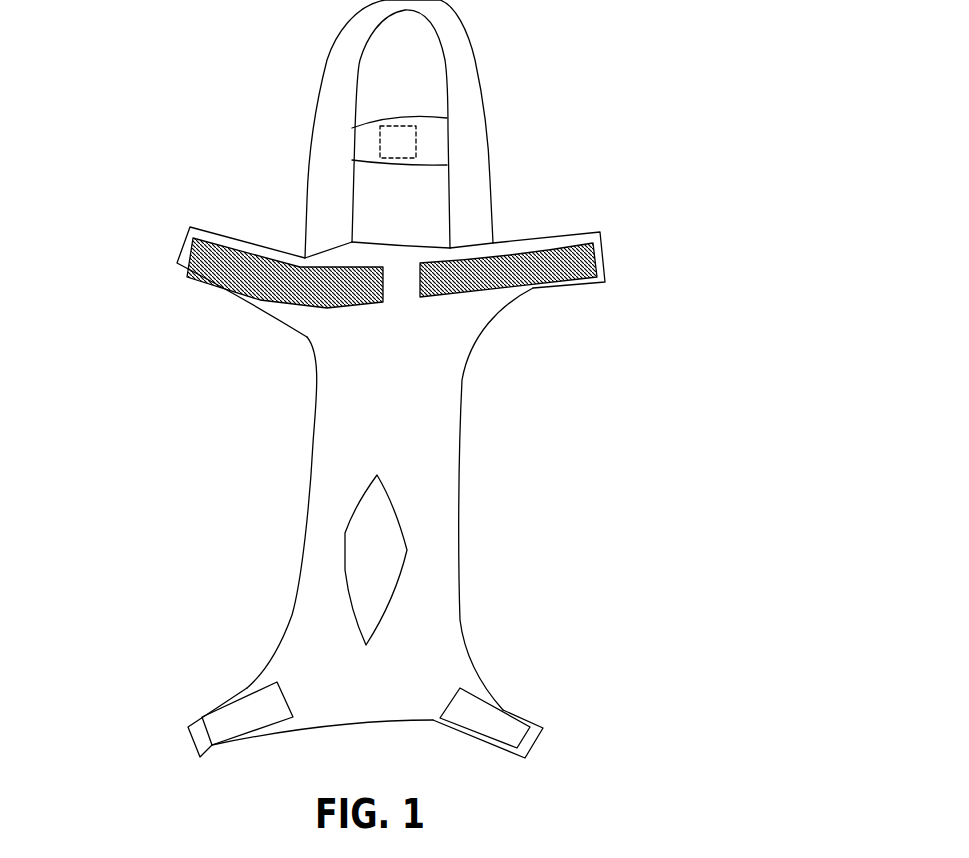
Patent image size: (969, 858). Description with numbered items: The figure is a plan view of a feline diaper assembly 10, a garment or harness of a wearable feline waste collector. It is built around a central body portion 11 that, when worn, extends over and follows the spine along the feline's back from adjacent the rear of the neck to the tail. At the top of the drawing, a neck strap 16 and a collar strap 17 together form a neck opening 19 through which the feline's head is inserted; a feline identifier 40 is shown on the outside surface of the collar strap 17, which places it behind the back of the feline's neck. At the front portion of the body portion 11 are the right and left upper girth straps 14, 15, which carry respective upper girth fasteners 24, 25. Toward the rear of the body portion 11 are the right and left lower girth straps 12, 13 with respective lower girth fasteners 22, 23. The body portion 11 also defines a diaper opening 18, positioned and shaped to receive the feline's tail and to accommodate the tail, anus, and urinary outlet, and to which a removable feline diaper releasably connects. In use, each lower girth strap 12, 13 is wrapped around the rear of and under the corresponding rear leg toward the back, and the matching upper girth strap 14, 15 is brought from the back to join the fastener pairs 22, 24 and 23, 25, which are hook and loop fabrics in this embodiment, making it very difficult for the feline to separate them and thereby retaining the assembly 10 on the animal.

The feline diaper assembly 10 is at (779, 106).
The central body portion 11 is at (478, 380).
The right lower girth strap 12 is at (512, 690).
The left lower girth strap 13 is at (245, 686).
The right upper girth strap 14 is at (559, 304).
The left upper girth strap 15 is at (193, 306).
The neck strap 16 is at (300, 78).
The collar strap 17 is at (447, 120).
The diaper opening 18 is at (343, 542).
The neck opening 19 is at (427, 86).
The right lower girth fastener 22 is at (510, 716).
The left lower girth fastener 23 is at (188, 726).
The right upper girth fastener 24 is at (590, 260).
The left upper girth fastener 25 is at (185, 258).
The feline identifier 40 is at (367, 164).